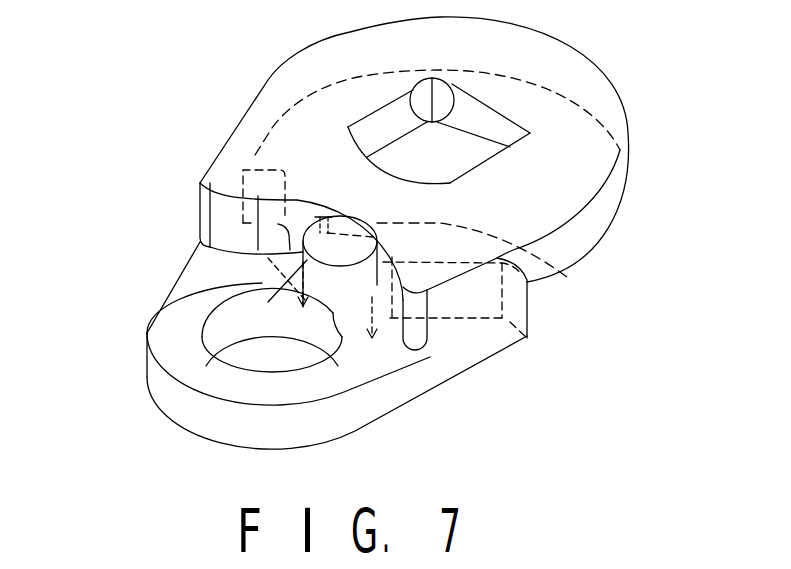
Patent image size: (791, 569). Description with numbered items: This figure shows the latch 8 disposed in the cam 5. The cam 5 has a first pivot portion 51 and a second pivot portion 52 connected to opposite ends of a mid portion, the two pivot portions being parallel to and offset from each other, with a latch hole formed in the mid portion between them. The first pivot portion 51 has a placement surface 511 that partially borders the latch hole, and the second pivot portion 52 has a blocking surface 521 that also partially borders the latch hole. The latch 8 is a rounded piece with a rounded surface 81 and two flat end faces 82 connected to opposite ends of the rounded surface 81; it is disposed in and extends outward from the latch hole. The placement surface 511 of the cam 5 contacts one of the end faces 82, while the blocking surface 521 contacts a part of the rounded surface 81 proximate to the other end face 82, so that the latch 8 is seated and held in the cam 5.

The cam 5 is at (353, 240).
The first pivot portion 51 is at (294, 353).
The placement surface 511 is at (200, 286).
The second pivot portion 52 is at (422, 183).
The blocking surface 521 is at (565, 274).
The latch 8 is at (311, 331).
The rounded surface 81 is at (370, 285).
The flat end faces 82 is at (335, 250).